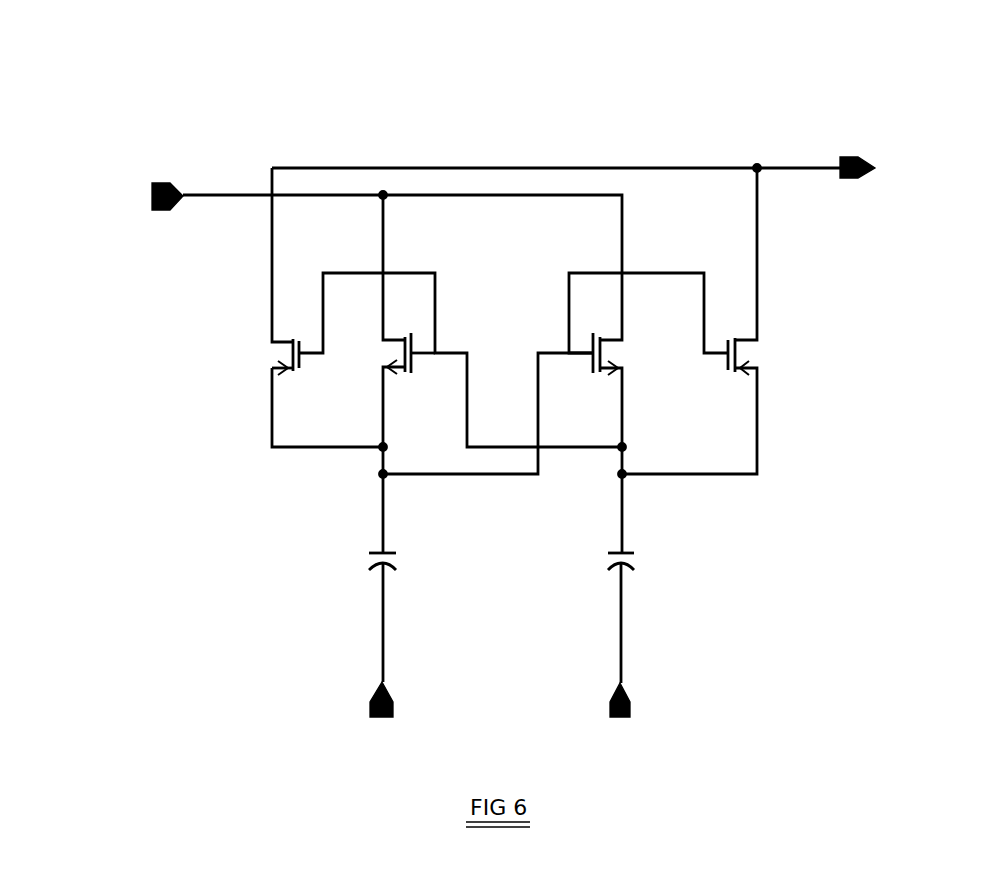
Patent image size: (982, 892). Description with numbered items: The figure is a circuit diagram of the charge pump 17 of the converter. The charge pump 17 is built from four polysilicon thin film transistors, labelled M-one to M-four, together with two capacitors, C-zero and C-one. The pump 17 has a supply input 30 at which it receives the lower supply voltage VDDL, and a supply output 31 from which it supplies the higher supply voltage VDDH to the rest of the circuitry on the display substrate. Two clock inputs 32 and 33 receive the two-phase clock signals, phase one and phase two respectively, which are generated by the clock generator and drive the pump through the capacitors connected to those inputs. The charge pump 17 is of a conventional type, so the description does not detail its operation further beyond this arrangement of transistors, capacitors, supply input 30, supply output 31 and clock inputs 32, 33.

The charge pump 17 is at (510, 390).
The supply input 30 is at (165, 183).
The supply output 31 is at (855, 155).
The clock input 32 is at (388, 692).
The clock input 33 is at (626, 692).